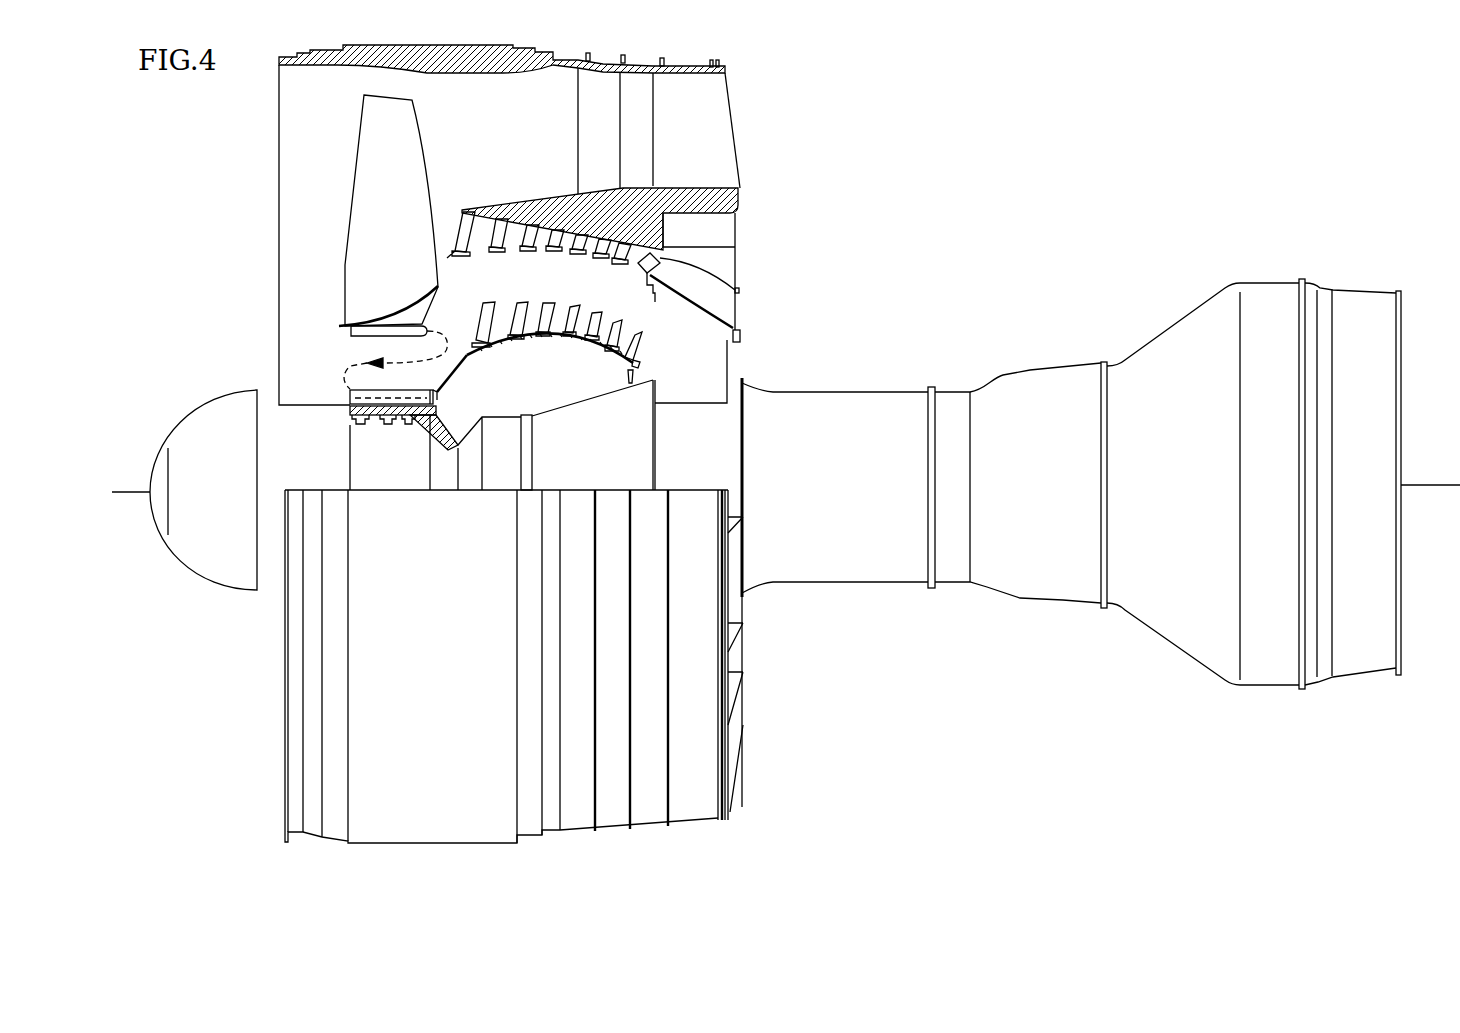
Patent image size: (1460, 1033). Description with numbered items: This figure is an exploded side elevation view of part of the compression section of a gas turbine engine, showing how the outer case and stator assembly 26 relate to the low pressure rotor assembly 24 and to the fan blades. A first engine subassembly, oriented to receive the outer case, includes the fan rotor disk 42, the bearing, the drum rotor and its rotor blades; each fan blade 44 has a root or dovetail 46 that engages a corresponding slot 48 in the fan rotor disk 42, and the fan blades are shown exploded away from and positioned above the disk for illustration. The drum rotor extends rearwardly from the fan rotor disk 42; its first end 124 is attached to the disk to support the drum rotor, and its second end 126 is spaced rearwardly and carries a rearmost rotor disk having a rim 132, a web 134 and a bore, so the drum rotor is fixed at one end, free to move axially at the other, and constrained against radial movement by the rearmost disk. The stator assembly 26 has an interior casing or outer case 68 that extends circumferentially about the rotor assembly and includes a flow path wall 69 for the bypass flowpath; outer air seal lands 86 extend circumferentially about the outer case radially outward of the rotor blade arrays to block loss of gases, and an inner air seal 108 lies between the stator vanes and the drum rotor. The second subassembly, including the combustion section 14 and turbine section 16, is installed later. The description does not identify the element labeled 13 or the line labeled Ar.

The inner flowpath wall 13 is at (632, 390).
The combustion section 14 is at (1103, 337).
The turbine section 16 is at (1335, 275).
The low pressure rotor assembly 24 is at (522, 342).
The stator assembly 26 is at (725, 176).
The fan rotor disk 42 is at (373, 438).
The fan blade 44 is at (402, 224).
The root or dovetail 46 is at (367, 336).
The slot 48 is at (401, 392).
The outer case 68 is at (742, 190).
The flow path wall 69 is at (666, 187).
The outer air seal lands 86 is at (611, 240).
The inner air seal 108 is at (533, 248).
The first end 124 is at (440, 394).
The second end 126 is at (652, 371).
The rim 132 is at (641, 362).
The web 134 is at (628, 373).
The axis of rotation Ar is at (147, 490).